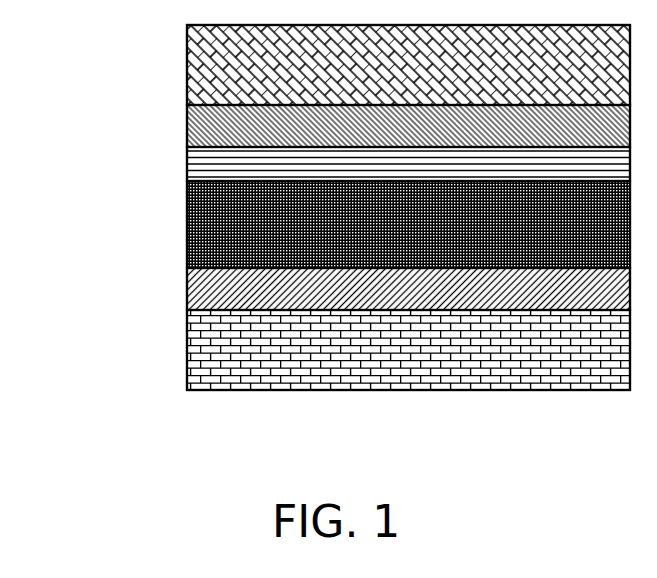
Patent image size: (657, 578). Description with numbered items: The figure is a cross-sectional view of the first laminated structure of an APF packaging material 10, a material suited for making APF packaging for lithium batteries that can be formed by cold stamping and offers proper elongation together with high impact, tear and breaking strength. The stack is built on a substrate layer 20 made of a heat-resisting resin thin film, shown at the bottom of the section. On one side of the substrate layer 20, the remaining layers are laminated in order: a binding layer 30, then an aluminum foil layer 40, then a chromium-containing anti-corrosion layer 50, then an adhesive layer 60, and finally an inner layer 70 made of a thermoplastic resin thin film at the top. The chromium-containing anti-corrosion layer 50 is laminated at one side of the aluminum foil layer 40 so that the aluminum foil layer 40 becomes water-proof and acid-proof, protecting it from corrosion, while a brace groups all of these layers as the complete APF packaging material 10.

The APF packaging material 10 is at (88, 50).
The substrate layer 20 is at (187, 356).
The binding layer 30 is at (187, 293).
The aluminum foil layer 40 is at (187, 225).
The chromium-containing anti-corrosion layer 50 is at (187, 168).
The adhesive layer 60 is at (187, 129).
The inner layer 70 is at (187, 70).